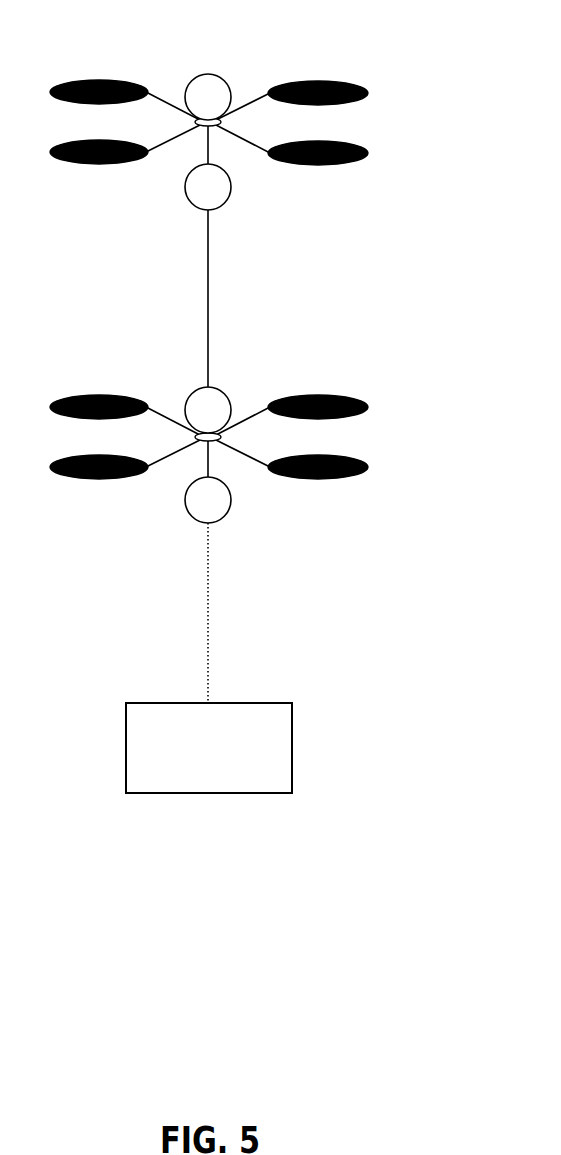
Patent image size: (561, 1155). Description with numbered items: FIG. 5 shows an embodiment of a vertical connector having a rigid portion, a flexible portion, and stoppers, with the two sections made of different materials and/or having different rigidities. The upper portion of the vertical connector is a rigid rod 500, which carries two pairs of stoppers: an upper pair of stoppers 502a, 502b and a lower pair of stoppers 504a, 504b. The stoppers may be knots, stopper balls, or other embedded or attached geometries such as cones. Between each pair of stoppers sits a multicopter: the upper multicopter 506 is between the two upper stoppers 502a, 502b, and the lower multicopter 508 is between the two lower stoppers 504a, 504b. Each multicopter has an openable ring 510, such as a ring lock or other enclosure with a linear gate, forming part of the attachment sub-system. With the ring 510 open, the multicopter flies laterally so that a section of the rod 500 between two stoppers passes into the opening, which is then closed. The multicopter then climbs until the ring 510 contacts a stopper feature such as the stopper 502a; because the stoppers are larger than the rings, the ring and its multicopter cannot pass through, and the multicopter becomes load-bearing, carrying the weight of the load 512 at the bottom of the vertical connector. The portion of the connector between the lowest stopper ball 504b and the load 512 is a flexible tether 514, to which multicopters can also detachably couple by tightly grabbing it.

The rod 500 is at (208, 306).
The upper stopper 502a is at (211, 74).
The upper stopper 502b is at (231, 189).
The lower stopper 504a is at (224, 393).
The lower stopper 504b is at (231, 503).
The upper multicopter 506 is at (368, 91).
The lower multicopter 508 is at (368, 405).
The openable ring 510 is at (203, 126).
The load 512 is at (292, 748).
The tether 514 is at (208, 605).